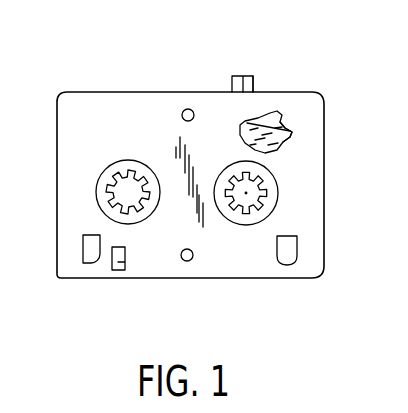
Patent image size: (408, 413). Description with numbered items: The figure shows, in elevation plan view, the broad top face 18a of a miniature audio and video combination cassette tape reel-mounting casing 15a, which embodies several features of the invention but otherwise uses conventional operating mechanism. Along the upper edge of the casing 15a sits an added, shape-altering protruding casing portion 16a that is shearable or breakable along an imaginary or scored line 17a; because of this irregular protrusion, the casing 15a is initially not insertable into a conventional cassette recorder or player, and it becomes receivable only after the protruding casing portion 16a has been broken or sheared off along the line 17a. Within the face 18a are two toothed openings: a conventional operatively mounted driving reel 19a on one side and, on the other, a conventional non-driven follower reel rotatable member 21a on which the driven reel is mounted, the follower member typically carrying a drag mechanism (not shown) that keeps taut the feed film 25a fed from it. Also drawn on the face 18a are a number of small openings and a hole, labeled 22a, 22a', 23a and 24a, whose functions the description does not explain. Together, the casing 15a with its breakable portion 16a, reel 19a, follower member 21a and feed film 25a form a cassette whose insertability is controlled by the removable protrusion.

The casing 15a is at (312, 86).
The protruding casing portion 16a is at (255, 84).
The scored line 17a is at (255, 43).
The broad top face 18a is at (303, 120).
The driving reel 19a is at (277, 205).
The non driven follower reel rotatable member 21a is at (130, 187).
The slot 22a is at (77, 274).
The slot 22a' is at (310, 275).
The hole 23a is at (192, 262).
The slot 24a is at (122, 270).
The feed film 25a is at (282, 142).